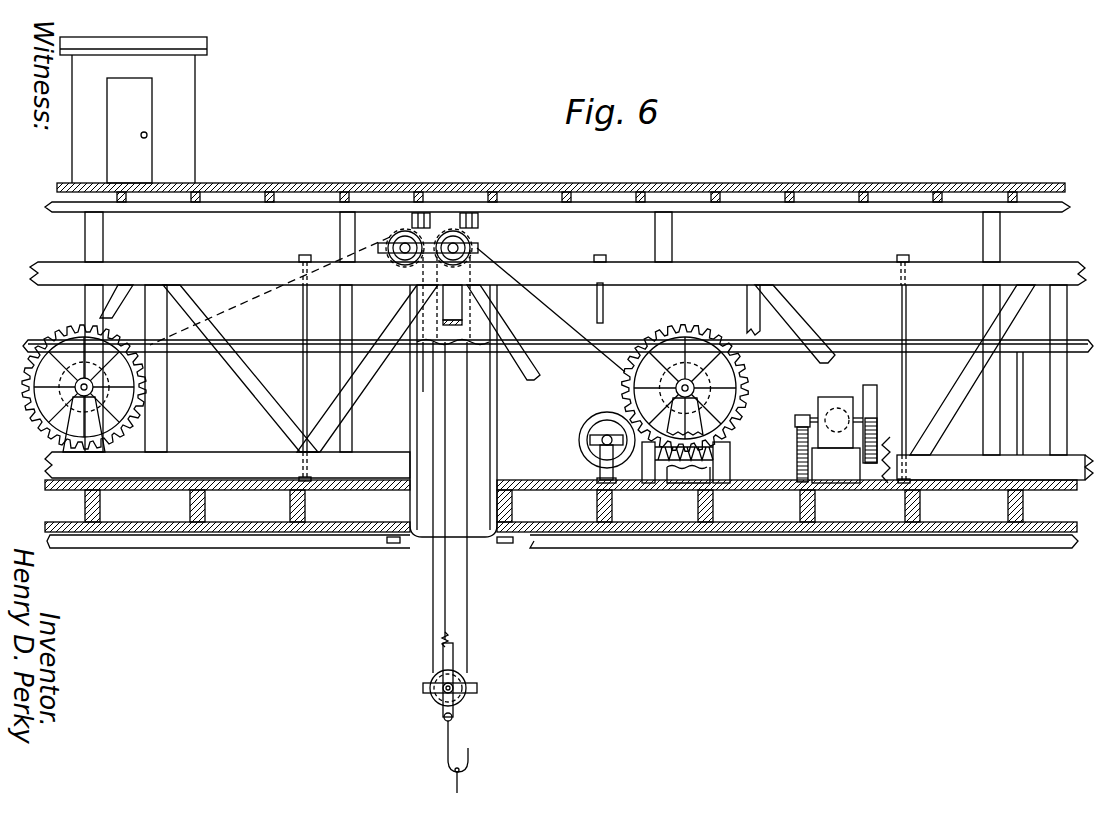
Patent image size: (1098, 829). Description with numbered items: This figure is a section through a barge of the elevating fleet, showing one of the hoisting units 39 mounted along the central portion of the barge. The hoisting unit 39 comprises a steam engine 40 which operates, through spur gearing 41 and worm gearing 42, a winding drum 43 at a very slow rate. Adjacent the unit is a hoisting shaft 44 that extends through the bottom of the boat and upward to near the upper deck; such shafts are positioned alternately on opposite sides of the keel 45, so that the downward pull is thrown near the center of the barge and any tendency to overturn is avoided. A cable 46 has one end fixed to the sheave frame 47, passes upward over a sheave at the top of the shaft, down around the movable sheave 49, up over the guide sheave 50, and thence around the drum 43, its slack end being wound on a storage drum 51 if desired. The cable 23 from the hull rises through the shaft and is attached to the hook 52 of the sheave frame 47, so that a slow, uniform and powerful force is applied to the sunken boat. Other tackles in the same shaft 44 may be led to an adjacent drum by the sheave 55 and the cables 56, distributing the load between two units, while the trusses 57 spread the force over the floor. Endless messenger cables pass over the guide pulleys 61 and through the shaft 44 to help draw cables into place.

The cable 23 is at (450, 778).
The hoisting unit 39 is at (724, 411).
The steam engine 40 is at (832, 398).
The spur gearing 41 is at (803, 420).
The worm gearing 42 is at (713, 462).
The winding drum 43 is at (742, 375).
The hoisting shaft 44 is at (500, 400).
The keel 45 is at (718, 545).
The cable 46 is at (538, 302).
The sheave frame 47 is at (477, 687).
The movable sheave 49 is at (462, 697).
The guide sheave 50 is at (477, 238).
The storage drum 51 is at (580, 437).
The hook 52 is at (470, 753).
The sheave 55 is at (397, 238).
The cables 56 is at (233, 297).
The trusses 57 is at (247, 383).
The guide pulleys 61 is at (480, 226).